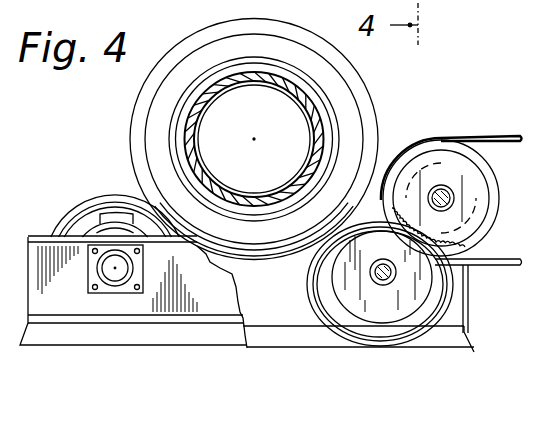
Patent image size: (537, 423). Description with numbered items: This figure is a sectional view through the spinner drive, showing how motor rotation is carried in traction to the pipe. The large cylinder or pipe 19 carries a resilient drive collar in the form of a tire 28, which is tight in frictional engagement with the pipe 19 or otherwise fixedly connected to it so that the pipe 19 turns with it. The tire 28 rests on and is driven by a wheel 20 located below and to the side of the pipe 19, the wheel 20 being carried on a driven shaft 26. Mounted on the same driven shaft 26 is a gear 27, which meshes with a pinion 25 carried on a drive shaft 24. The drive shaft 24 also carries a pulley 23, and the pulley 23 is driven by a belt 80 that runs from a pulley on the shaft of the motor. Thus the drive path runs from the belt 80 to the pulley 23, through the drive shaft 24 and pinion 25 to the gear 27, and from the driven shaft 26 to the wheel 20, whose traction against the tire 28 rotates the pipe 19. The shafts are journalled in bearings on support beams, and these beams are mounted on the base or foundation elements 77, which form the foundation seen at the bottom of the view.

The pipe 19 is at (245, 82).
The wheels 20 is at (315, 276).
The pulley 23 is at (499, 197).
The drive shaft 24 is at (446, 195).
The pinion 25 is at (466, 216).
The driven shaft 26 is at (383, 285).
The gear 27 is at (382, 250).
The tires 28 is at (341, 91).
The base or foundation elements 77 is at (466, 349).
The belt 80 is at (497, 134).